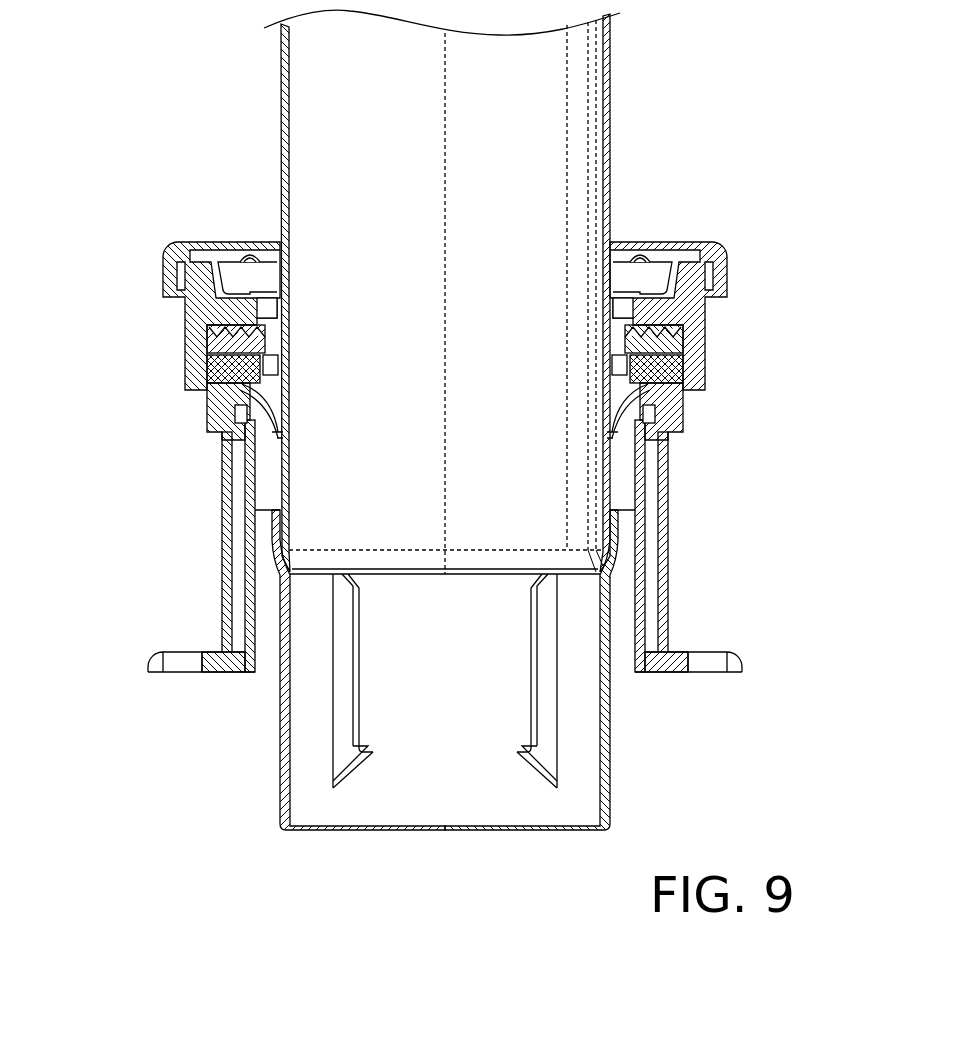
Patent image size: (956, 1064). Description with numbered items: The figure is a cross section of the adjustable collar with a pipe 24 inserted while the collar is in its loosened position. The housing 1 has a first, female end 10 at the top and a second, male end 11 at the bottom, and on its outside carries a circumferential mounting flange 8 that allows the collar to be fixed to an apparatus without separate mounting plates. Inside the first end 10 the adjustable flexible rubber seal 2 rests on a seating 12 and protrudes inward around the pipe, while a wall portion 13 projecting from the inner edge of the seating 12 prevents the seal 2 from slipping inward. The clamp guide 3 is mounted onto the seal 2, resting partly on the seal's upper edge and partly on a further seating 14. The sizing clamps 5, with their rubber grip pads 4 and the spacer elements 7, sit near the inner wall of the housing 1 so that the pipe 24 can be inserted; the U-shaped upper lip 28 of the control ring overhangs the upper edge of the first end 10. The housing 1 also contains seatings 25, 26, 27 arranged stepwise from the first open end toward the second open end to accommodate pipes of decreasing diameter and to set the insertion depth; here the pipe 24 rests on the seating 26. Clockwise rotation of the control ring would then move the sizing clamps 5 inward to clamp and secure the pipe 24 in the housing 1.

The housing 1 is at (221, 555).
The adjustable flexible rubber seal 2 is at (235, 418).
The clamp guide 3 is at (680, 372).
The rubber grip pads 4 is at (628, 325).
The sizing clamps 5 is at (648, 300).
The spacer elements 7 is at (635, 266).
The circumferential mounting flange 8 is at (712, 652).
The first (female) end 10 is at (185, 353).
The second (male) end 11 is at (280, 826).
The seating 12 is at (655, 420).
The wall portion 13 is at (660, 408).
The seating 14 is at (695, 378).
The pipe 24 is at (582, 90).
The seating 25 is at (625, 512).
The seating 26 is at (540, 573).
The seating 27 is at (520, 750).
The U-shaped upper lip 28 is at (715, 258).